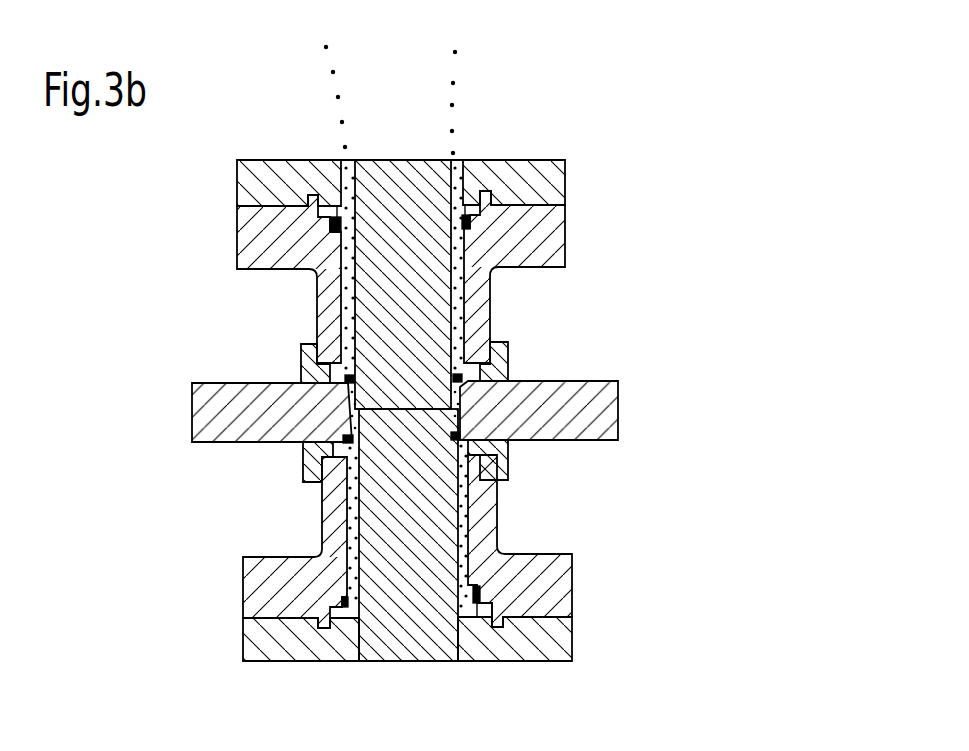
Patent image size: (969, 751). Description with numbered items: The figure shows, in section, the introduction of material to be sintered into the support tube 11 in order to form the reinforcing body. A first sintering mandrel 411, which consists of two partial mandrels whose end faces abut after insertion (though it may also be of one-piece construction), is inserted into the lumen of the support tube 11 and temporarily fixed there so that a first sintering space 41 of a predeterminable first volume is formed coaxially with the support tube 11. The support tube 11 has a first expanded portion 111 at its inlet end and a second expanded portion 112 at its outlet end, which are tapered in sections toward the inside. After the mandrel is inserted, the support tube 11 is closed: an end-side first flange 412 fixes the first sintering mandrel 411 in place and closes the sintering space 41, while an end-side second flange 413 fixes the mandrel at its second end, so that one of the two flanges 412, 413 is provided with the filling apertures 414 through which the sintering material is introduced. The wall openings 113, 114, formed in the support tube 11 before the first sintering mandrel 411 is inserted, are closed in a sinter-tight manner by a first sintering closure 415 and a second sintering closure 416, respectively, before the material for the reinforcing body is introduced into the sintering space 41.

The support tube 11 is at (556, 592).
The first sintering space 41 is at (350, 620).
The first expanded portion 111 is at (463, 230).
The second expanded portion 112 is at (475, 620).
The wall opening 113 is at (333, 453).
The wall opening 114 is at (480, 445).
The first sintering mandrel 411 is at (378, 512).
The first flange 412 is at (405, 643).
The second flange 413 is at (237, 186).
The filling apertures 414 is at (463, 160).
The first sintering closure 415 is at (302, 353).
The second sintering closure 416 is at (500, 360).